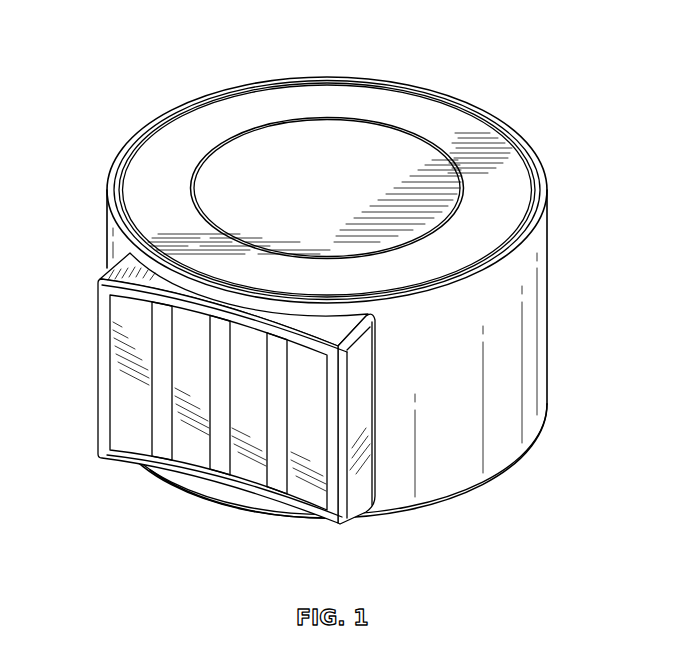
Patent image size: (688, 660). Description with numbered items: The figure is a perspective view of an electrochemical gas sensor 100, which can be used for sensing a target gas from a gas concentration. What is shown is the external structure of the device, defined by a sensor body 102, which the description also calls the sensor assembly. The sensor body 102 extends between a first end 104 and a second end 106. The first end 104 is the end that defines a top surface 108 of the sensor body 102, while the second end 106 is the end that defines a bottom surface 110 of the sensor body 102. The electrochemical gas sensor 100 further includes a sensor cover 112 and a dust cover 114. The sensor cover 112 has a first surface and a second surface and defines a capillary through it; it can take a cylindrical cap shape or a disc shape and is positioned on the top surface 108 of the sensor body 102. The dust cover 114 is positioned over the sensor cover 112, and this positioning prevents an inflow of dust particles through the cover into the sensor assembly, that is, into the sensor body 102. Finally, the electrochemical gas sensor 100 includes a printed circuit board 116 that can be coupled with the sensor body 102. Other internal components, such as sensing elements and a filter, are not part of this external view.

The electrochemical gas sensor 100 is at (77, 89).
The sensor body 102 is at (528, 357).
The first end 104 is at (418, 507).
The second end 106 is at (481, 109).
The top surface 108 is at (267, 79).
The bottom surface 110 is at (267, 502).
The sensor cover 112 is at (487, 182).
The dust cover 114 is at (238, 167).
The printed circuit board 116 is at (126, 390).